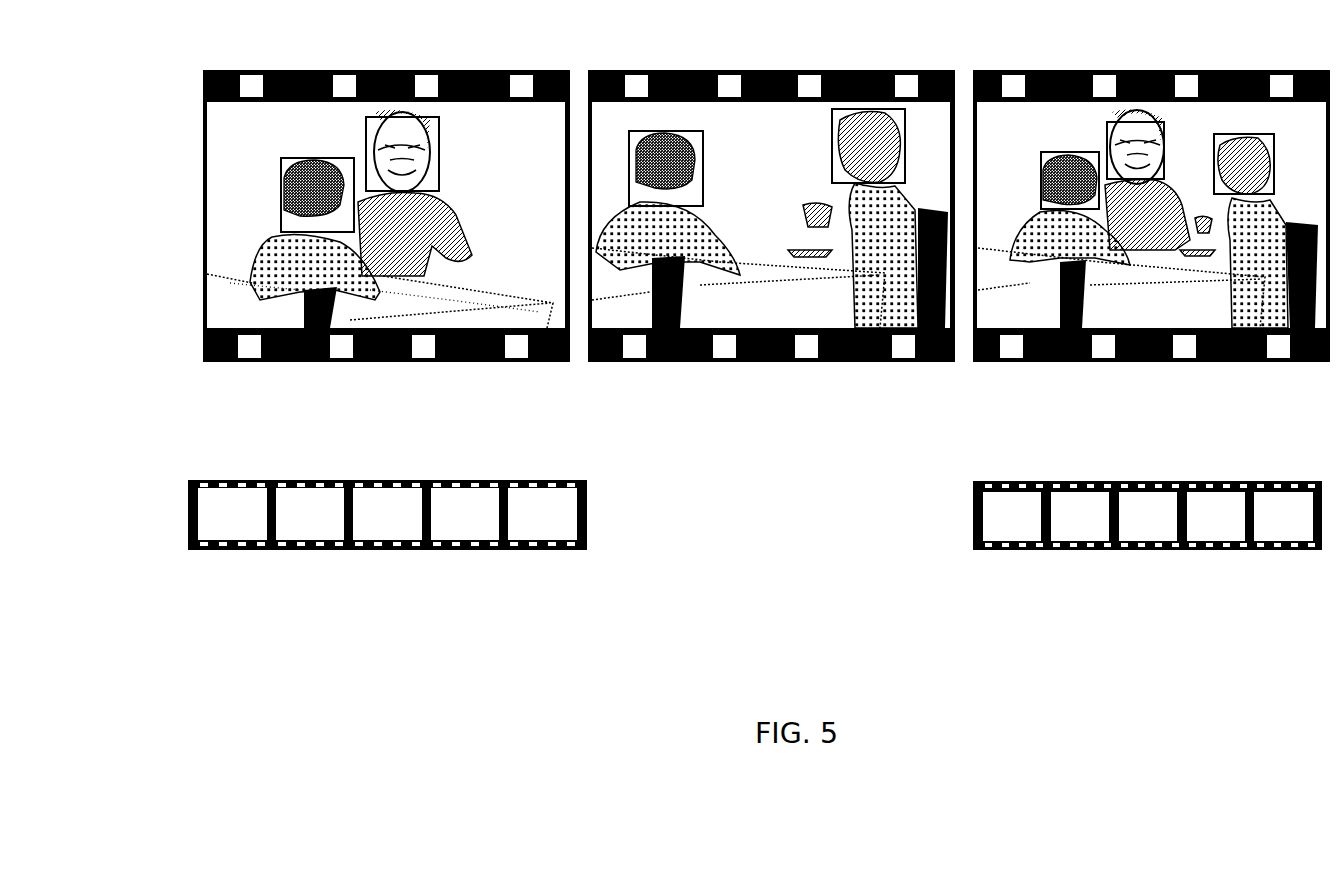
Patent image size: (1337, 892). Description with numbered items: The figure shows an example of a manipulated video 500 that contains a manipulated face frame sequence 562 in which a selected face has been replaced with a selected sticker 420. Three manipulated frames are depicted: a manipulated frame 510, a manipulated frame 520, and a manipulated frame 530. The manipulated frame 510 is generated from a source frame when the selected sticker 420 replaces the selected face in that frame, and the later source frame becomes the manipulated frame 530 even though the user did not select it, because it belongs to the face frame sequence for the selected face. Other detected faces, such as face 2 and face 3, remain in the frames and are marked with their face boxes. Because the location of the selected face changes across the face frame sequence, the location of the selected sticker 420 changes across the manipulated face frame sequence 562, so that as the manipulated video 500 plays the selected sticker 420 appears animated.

The manipulated video 500 is at (945, 29).
The manipulated frame 510 is at (455, 420).
The manipulated frame 520 is at (832, 420).
The manipulated frame 530 is at (1205, 420).
The face 2 is at (282, 188).
The face 3 is at (832, 168).
The selected sticker 420 is at (440, 155).
The manipulated face frame sequence 562 is at (158, 541).